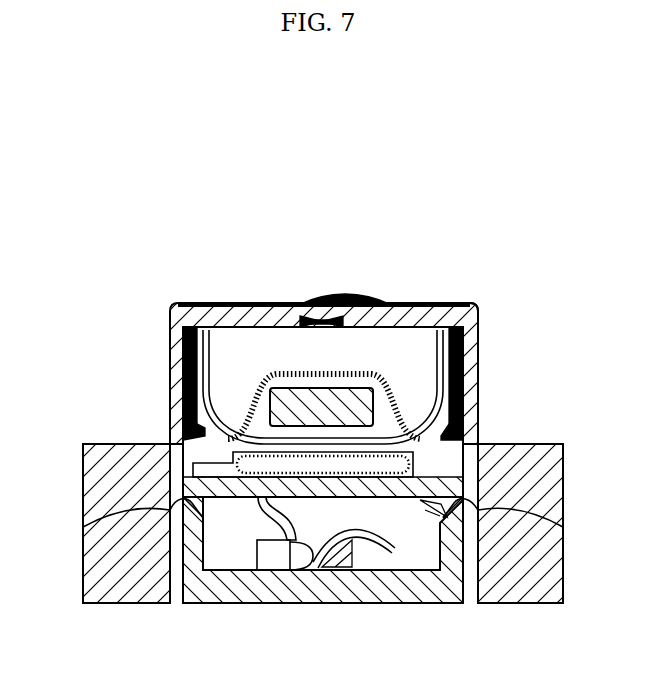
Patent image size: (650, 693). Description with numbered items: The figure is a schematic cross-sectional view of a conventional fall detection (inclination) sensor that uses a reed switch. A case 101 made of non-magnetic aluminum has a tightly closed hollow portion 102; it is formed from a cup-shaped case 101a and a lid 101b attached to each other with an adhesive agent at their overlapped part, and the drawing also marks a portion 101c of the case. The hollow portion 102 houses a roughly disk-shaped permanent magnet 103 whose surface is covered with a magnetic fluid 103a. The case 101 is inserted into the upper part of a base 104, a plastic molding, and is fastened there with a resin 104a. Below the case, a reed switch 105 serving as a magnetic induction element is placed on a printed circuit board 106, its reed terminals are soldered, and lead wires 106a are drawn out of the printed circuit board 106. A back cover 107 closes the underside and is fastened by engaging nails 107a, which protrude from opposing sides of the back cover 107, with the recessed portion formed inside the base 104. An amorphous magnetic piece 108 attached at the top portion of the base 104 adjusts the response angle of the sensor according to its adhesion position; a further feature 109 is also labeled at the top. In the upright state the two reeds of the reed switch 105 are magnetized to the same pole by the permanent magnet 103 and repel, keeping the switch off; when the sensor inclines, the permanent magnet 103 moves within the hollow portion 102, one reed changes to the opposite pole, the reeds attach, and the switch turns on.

The case 101 is at (471, 348).
The cup-shaped case 101a is at (474, 433).
The lid 101b is at (435, 304).
The housing inner top portion 101c is at (303, 309).
The hollow portion 102 is at (186, 362).
The permanent magnet 103 is at (320, 390).
The magnetic fluid 103a is at (390, 385).
The base 104 is at (100, 458).
The resin 104a is at (186, 418).
The reed switch 105 is at (430, 452).
The printed circuit board 106 is at (418, 498).
The lead wires 106a is at (297, 531).
The back cover 107 is at (386, 603).
The nails 107a is at (85, 527).
The amorphous magnetic piece 108 is at (387, 301).
The protrusion 109 is at (337, 297).